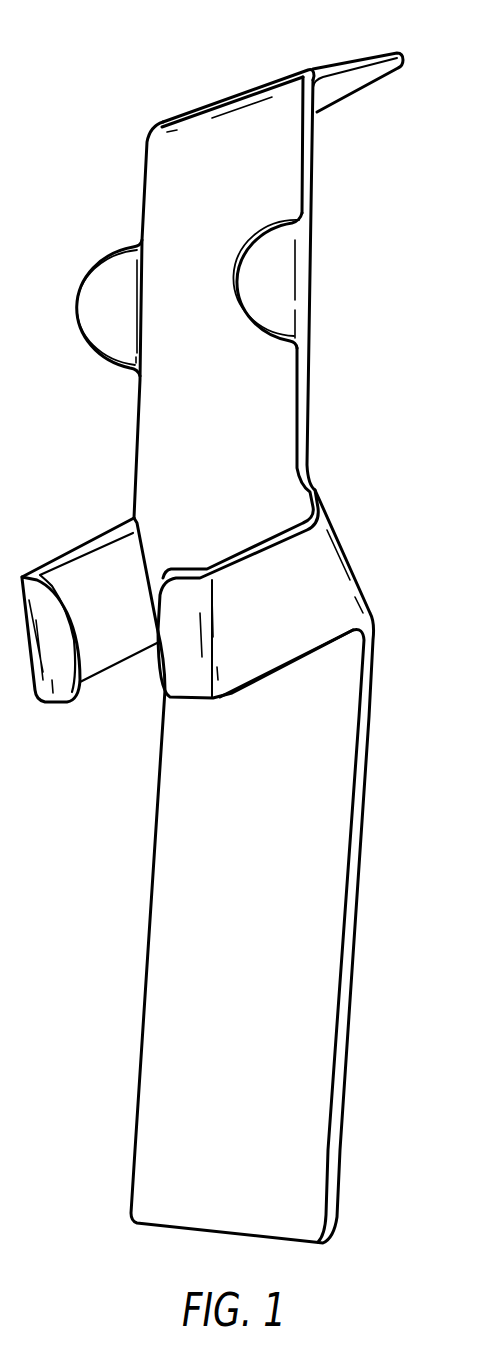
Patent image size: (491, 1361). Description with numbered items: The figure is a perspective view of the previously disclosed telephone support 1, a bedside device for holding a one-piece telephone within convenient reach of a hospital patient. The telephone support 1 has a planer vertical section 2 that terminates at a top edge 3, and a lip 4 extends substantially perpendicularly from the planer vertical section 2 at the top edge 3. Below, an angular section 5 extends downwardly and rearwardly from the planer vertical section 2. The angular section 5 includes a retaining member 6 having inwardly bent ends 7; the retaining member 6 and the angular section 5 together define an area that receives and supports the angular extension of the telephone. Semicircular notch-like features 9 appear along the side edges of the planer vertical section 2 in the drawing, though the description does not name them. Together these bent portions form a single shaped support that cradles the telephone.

The telephone support 1 is at (377, 566).
The planer vertical section 2 is at (293, 196).
The top edge 3 is at (243, 90).
The lip 4 is at (370, 85).
The angular section 5 is at (272, 513).
The retaining member 6 is at (327, 628).
The inwardly bent ends 7 is at (52, 683).
The notch 9 is at (293, 302).